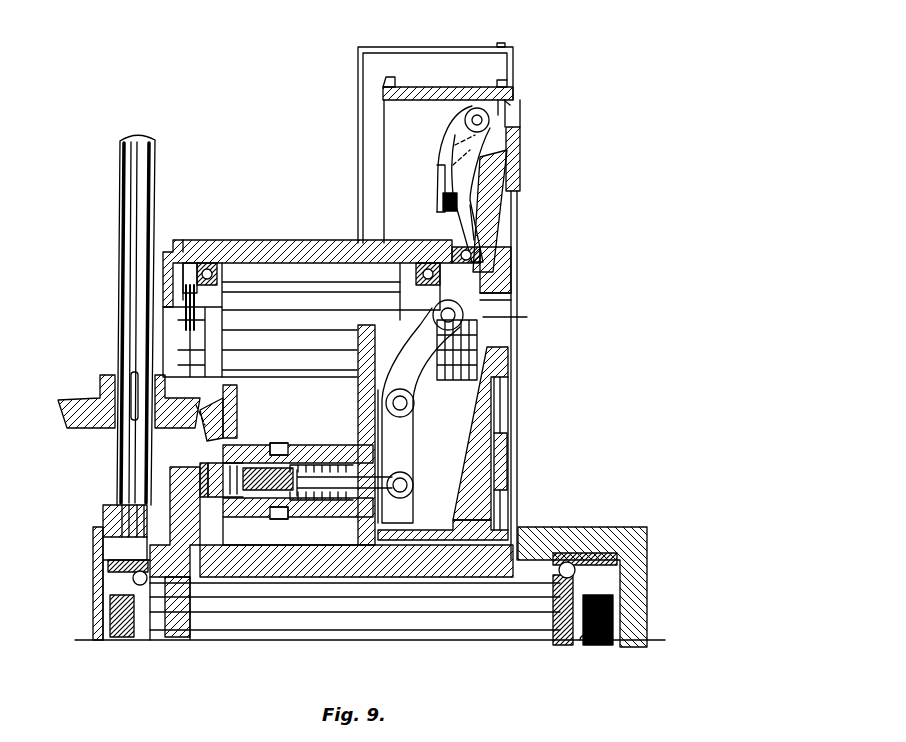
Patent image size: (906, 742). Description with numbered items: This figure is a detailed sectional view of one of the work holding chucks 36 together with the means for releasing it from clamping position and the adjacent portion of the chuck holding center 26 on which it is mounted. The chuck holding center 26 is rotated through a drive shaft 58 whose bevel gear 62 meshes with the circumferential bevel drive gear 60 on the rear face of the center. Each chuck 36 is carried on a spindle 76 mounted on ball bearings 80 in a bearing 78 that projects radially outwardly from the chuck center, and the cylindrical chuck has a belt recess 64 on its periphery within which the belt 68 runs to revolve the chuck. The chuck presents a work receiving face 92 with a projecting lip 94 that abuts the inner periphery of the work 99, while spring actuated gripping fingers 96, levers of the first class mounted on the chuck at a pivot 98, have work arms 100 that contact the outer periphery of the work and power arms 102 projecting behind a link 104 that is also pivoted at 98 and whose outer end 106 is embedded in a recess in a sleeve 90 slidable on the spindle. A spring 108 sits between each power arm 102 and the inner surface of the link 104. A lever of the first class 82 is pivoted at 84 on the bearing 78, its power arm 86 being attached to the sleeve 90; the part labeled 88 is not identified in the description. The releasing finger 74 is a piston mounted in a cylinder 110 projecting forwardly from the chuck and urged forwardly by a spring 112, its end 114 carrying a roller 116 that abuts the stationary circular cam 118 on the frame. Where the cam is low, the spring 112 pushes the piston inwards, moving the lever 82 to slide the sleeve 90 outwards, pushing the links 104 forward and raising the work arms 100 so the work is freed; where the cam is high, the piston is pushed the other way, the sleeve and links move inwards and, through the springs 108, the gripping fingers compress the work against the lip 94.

The chuck holding center 26 is at (506, 545).
The chuck 36 is at (517, 212).
The drive shaft 58 is at (126, 301).
The circumferential bevel drive gear 60 is at (224, 408).
The bevel gear 62 is at (60, 413).
The belt recess 64 is at (390, 78).
The belt 68 is at (410, 88).
The releasing finger 74 is at (233, 455).
The spindle 76 is at (266, 290).
The bearing 78 is at (243, 242).
The ball bearings 80 is at (208, 248).
The lever of the first class 82 is at (406, 425).
The pivot 84 is at (360, 412).
The power arm 86 is at (405, 494).
The pivot pin 88 is at (415, 398).
The sleeve 90 is at (445, 255).
The work receiving face 92 is at (506, 256).
The lip 94 is at (497, 182).
The gripping fingers 96 is at (505, 102).
The pivot 98 is at (476, 108).
The work 99 is at (520, 152).
The work arms 100 is at (490, 128).
The power arms 102 is at (441, 190).
The link 104 is at (478, 252).
The outer end 106 is at (511, 270).
The spring 108 is at (442, 192).
The cylinder 110 is at (290, 446).
The spring 112 is at (298, 462).
The piston end 114 is at (224, 470).
The roller 116 is at (203, 466).
The circular cam 118 is at (170, 482).